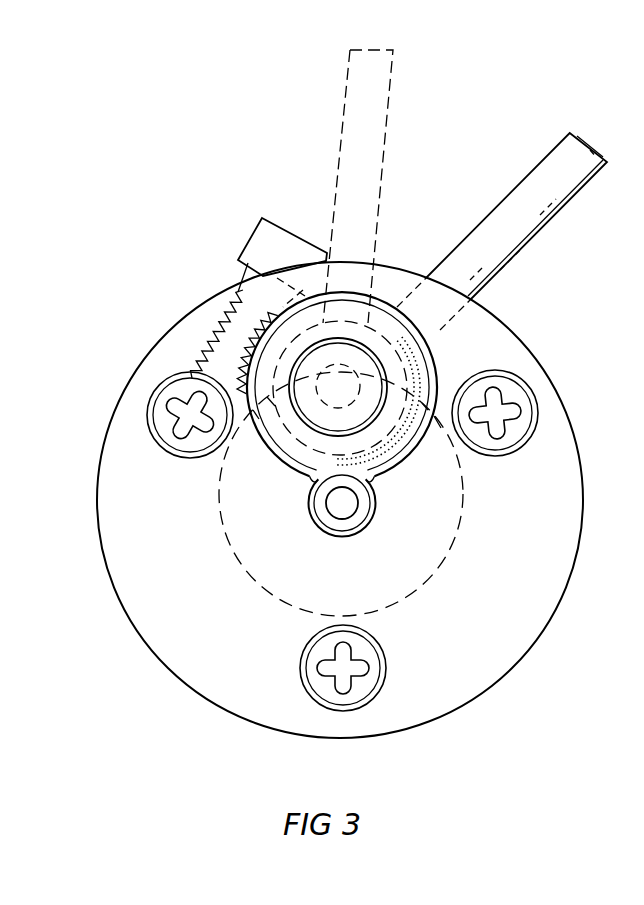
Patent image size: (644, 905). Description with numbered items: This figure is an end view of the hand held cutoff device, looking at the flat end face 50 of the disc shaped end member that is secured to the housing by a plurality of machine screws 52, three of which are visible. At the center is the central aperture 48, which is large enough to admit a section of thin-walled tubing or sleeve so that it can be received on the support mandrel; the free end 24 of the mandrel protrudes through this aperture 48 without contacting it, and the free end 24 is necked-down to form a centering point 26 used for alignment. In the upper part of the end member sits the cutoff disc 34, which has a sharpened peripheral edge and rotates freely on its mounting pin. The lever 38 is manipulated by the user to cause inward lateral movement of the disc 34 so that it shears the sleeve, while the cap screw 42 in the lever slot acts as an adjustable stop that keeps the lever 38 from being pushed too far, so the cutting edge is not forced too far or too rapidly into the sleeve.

The free end 24 is at (363, 507).
The centering point 26 is at (338, 502).
The cutoff disc 34 is at (393, 357).
The lever 38 is at (532, 223).
The cap screw 42 is at (257, 240).
The central aperture 48 is at (316, 521).
The flat end face 50 is at (552, 453).
The machine screws 52 is at (352, 700).